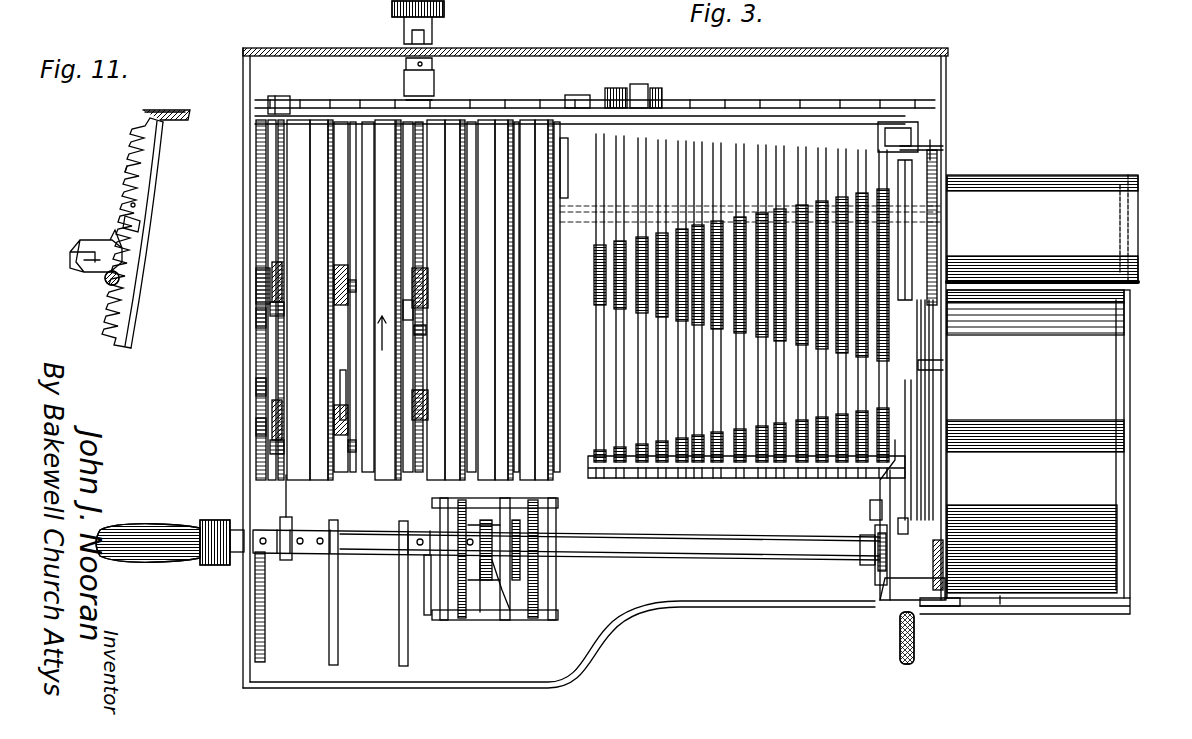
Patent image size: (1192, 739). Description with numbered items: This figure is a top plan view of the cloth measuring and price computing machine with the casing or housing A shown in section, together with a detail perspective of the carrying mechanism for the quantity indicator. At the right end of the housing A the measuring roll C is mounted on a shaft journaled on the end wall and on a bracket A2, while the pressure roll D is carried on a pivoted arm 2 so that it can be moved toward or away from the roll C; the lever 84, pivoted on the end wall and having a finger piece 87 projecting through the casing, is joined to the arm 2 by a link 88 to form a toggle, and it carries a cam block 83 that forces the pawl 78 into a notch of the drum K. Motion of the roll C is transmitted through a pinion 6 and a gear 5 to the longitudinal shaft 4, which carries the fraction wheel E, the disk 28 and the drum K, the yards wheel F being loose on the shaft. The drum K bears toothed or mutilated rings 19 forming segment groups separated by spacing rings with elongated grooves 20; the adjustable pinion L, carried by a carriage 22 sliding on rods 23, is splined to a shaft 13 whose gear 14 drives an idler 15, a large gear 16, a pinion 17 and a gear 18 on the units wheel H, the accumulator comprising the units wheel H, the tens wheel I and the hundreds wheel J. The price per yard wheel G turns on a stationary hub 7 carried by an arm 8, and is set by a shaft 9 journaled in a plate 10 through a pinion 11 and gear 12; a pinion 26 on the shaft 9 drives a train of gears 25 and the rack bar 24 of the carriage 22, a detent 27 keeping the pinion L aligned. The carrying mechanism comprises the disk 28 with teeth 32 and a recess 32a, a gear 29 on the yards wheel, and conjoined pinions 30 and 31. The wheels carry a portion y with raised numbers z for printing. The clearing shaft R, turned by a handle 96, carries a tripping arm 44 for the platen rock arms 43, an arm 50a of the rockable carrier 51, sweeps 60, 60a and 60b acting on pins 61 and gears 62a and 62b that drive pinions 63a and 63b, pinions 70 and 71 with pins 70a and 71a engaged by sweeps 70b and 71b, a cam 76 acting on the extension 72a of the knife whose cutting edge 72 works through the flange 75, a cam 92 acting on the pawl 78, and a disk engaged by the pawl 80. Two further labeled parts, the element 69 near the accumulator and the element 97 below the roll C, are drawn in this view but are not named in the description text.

In FIG. 3, the arm 2 is at (940, 212).
In FIG. 3, the shaft 4 is at (258, 288).
In FIG. 3, the gear 5 is at (934, 334).
In FIG. 3, the pinion 6 is at (930, 425).
In FIG. 3, the stationary hub or bearing 7 is at (380, 335).
In FIG. 3, the laterally-projecting arm 8 is at (419, 332).
In FIG. 3, the adjusting shaft 9 is at (428, 62).
In FIG. 3, the bearing plate or standard 10 is at (560, 100).
In FIG. 3, the pinion 11 is at (425, 128).
In FIG. 3, the gear 12 is at (375, 158).
In FIG. 3, the shaft 13 is at (615, 218).
In FIG. 3, the gear 14 is at (560, 250).
In FIG. 3, the idler 15 is at (565, 178).
In FIG. 3, the large gear 16 is at (550, 422).
In FIG. 3, the pinion 17 is at (553, 375).
In FIG. 3, the gear 18 is at (540, 445).
In FIG. 3, the toothed or mutilated rings 19 is at (712, 330).
In FIG. 3, the elongated grooves 20 is at (778, 330).
In FIG. 3, the carriage 22 is at (895, 122).
In FIG. 3, the rods 23 is at (935, 138).
In FIG. 3, the rack bar 24 is at (808, 110).
In FIG. 3, the train of gears 25 is at (575, 96).
In FIG. 3, the pinion 26 is at (410, 100).
In FIG. 3, the spring-actuated detent 27 is at (670, 112).
In FIG. 11, the disk 28 is at (140, 132).
In FIG. 3, the disk 28 is at (275, 156).
In FIG. 11, the gear 29 is at (128, 170).
In FIG. 3, the gear 29 is at (290, 192).
In FIG. 11, the pinion 30 is at (80, 243).
In FIG. 3, the pinion 30 is at (285, 96).
In FIG. 11, the pinion 31 is at (120, 282).
In FIG. 3, the pinion 31 is at (272, 96).
In FIG. 11, the teeth 32 is at (135, 204).
In FIG. 3, the teeth 32 is at (552, 250).
In FIG. 11, the recess 32a is at (140, 224).
In FIG. 3, the rock arms 43 is at (285, 496).
In FIG. 3, the tripping arm 44 is at (284, 560).
In FIG. 3, the arm 50a is at (512, 625).
In FIG. 3, the rockable carrier 51 is at (430, 615).
In FIG. 3, the sweep 60 is at (398, 636).
In FIG. 3, the sweep 60a is at (252, 630).
In FIG. 3, the sweep 60b is at (328, 640).
In FIG. 3, the laterally-projecting pins 61 is at (395, 476).
In FIG. 3, the gear 62a is at (268, 428).
In FIG. 3, the gear 62b is at (342, 475).
In FIG. 3, the pinion 63a is at (272, 318).
In FIG. 3, the pinion 63b is at (352, 258).
In FIG. 3, the rack 69 is at (555, 350).
In FIG. 3, the pinion 70 is at (540, 582).
In FIG. 3, the laterally-projecting pins 70a is at (560, 500).
In FIG. 3, the sweep 70b is at (548, 620).
In FIG. 3, the pinion 71 is at (490, 580).
In FIG. 3, the laterally-projecting pins 71a is at (440, 500).
In FIG. 3, the sweep 71b is at (486, 620).
In FIG. 3, the cutting edge 72 is at (955, 608).
In FIG. 3, the extension 72a is at (888, 600).
In FIG. 3, the shelf or flange 75 is at (1080, 614).
In FIG. 3, the cam 76 is at (866, 584).
In FIG. 3, the pawl 78 is at (870, 500).
In FIG. 3, the pawl 80 is at (940, 560).
In FIG. 3, the cam block 83 is at (900, 510).
In FIG. 3, the lever 84 is at (920, 482).
In FIG. 3, the finger piece 87 is at (912, 666).
In FIG. 3, the link 88 is at (948, 372).
In FIG. 3, the cam 92 is at (898, 524).
In FIG. 3, the handle 96 is at (150, 528).
In FIG. 3, the carriage rail 97 is at (1045, 605).
In FIG. 3, the casing or housing A is at (705, 610).
In FIG. 3, the bracket A2 is at (1130, 490).
In FIG. 3, the measuring roll C is at (1128, 374).
In FIG. 3, the pressure roll D is at (1142, 282).
In FIG. 3, the fraction wheel E is at (355, 125).
In FIG. 3, the yards wheel F is at (295, 118).
In FIG. 3, the price per yard indicator wheel G is at (385, 118).
In FIG. 3, the units wheel H is at (530, 118).
In FIG. 3, the tens wheel I is at (488, 118).
In FIG. 3, the hundreds wheel J is at (446, 118).
In FIG. 3, the drum K is at (720, 160).
In FIG. 3, the adjustable pinion L is at (915, 202).
In FIG. 3, the clearing shaft R is at (725, 540).
In FIG. 3, the portion y is at (330, 235).
In FIG. 3, the raised numbers z is at (318, 475).